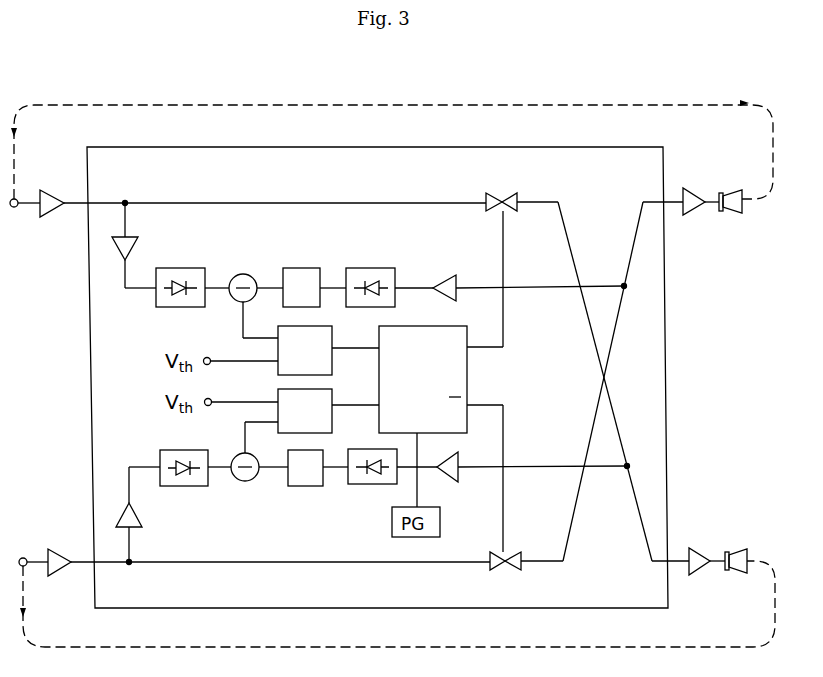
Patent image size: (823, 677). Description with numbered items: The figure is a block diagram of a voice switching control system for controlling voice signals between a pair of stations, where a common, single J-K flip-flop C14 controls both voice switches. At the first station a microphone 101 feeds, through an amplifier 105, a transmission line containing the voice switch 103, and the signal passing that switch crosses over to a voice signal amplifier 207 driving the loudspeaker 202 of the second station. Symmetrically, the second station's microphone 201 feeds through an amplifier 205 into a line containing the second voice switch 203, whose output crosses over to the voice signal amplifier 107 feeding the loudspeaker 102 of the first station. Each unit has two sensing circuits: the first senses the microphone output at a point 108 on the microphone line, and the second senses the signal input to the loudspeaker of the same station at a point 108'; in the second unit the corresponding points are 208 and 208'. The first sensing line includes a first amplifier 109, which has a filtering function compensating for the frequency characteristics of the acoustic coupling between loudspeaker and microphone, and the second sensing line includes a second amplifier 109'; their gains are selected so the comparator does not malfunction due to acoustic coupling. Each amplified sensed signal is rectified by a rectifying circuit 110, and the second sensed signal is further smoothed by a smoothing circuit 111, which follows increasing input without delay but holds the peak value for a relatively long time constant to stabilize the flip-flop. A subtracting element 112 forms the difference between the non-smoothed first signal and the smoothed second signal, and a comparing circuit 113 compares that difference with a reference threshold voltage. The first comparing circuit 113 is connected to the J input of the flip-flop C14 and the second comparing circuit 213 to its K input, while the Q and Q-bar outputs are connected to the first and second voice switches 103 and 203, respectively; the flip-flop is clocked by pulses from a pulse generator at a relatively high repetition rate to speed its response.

The microphone 101 is at (14, 208).
The loudspeaker 102 is at (737, 213).
The voice switch 103 is at (505, 193).
The amplifier 105 is at (55, 190).
The voice signal amplifier 107 is at (690, 188).
The sensing point 108 is at (144, 203).
The sensing point 108' is at (604, 268).
The first amplifier 109 is at (149, 382).
The second amplifier 109' is at (511, 360).
The rectifying circuit 110 is at (203, 268).
The smoothing circuit 111 is at (301, 268).
The subtracting element 112 is at (243, 274).
The comparing circuit 113 is at (332, 330).
The comparing circuit 213 is at (332, 396).
The J-K Flip-Flop C14 is at (467, 378).
The microphone 201 is at (23, 558).
The loudspeaker 202 is at (740, 573).
The voice switch 203 is at (510, 552).
The amplifier 205 is at (58, 549).
The voice signal amplifier 207 is at (697, 548).
The sensing point 208 is at (153, 564).
The sensing point 208' is at (609, 489).